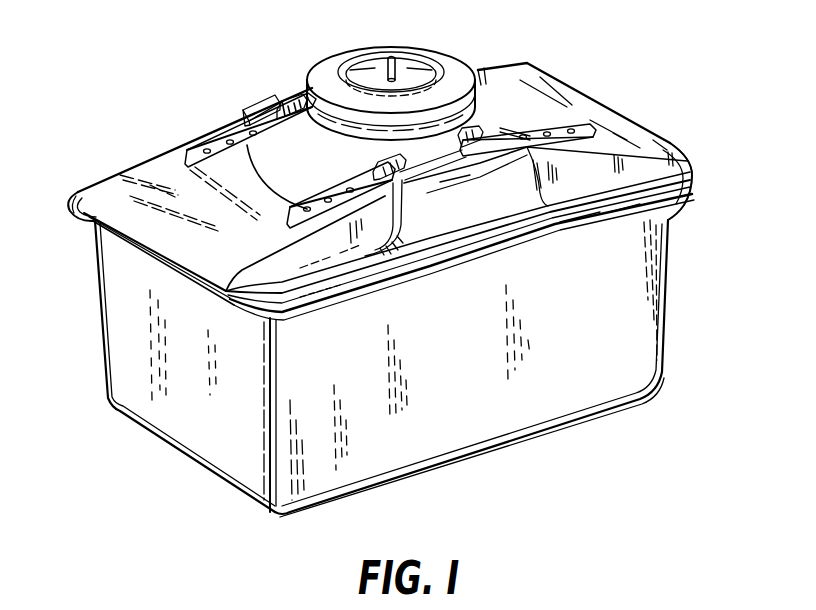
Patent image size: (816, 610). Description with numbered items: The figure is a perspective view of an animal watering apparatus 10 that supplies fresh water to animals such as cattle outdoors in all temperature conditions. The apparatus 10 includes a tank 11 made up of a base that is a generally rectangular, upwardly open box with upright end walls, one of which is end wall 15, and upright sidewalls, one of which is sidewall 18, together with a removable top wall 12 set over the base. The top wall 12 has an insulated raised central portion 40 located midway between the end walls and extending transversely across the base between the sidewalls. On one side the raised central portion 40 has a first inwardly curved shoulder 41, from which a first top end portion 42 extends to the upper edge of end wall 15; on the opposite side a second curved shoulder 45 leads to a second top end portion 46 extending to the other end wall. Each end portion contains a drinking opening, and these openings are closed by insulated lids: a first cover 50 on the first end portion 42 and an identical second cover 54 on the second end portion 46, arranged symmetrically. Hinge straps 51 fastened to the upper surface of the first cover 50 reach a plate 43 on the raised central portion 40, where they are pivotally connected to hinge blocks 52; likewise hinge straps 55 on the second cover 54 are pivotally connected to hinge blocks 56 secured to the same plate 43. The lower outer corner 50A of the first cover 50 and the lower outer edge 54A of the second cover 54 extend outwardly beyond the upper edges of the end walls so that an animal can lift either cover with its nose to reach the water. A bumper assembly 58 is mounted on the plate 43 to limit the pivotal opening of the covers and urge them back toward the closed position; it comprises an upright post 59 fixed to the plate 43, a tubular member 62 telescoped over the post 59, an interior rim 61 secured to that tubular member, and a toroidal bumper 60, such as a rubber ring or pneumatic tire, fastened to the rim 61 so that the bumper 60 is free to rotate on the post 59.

The animal watering apparatus 10 is at (673, 121).
The tank 11 is at (188, 430).
The top wall 12 is at (468, 236).
The end wall 15 is at (191, 366).
The sidewall 18 is at (500, 376).
The raised central portion 40 is at (262, 102).
The first inwardly curved shoulder 41 is at (393, 255).
The first top end portion 42 is at (315, 280).
The plate 43 is at (447, 140).
The second curved shoulder 45 is at (565, 224).
The second top end portion 46 is at (622, 195).
The first insulated cover 50 is at (160, 178).
The lower outer corner of first cover 50A is at (127, 248).
The hinge straps 51 is at (253, 164).
The hinge blocks 52 is at (280, 104).
The second insulated cover 54 is at (553, 100).
The lower outer edge of second cover 54A is at (695, 165).
The hinge straps 55 is at (503, 130).
The hinge blocks 56 is at (463, 142).
The bumper assembly 58 is at (372, 79).
The upright post 59 is at (394, 58).
The toroidal bumper 60 is at (463, 60).
The interior rim 61 is at (362, 70).
The tubular member 62 is at (415, 72).